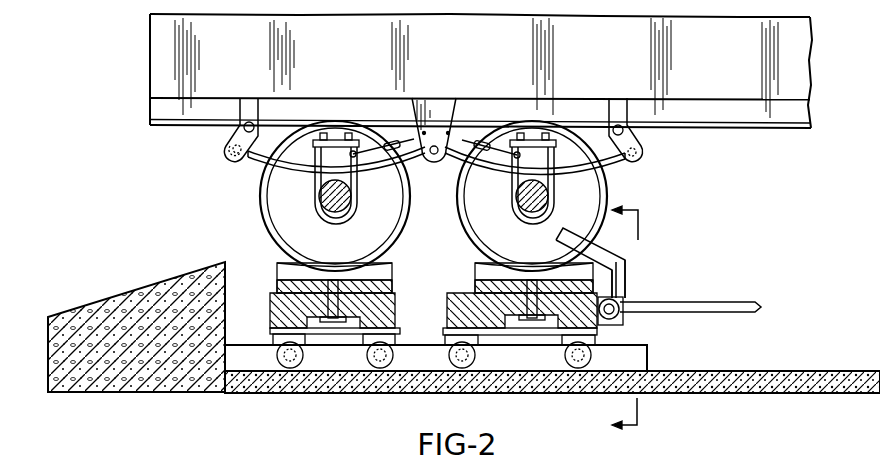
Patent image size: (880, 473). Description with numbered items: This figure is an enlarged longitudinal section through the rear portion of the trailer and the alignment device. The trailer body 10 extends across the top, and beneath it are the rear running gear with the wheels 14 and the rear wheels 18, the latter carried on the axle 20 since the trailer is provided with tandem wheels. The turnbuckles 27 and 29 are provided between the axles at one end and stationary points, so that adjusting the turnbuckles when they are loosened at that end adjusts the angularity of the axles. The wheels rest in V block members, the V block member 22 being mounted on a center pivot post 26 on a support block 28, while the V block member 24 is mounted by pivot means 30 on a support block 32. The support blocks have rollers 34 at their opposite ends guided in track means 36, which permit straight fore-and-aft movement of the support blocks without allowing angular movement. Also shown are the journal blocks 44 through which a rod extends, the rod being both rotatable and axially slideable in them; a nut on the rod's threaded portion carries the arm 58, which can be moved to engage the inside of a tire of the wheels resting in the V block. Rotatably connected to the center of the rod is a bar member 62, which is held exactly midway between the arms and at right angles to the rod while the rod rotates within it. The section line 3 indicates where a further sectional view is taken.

The section line 3- 3 is at (636, 317).
The trailer body 10 is at (724, 101).
The wheels 14 is at (592, 199).
The rear wheels 18 is at (294, 228).
The axle 20 is at (353, 205).
The V block member 22 is at (580, 276).
The V block member 24 is at (393, 275).
The center pivot post 26 is at (530, 320).
The turnbuckle 27 is at (491, 130).
The support block 28 is at (557, 320).
The turnbuckle 29 is at (392, 142).
The pivot means 30 is at (333, 324).
The support block 32 is at (275, 321).
The rollers 34 is at (276, 358).
The track means 36 is at (637, 345).
The journal blocks 44 is at (622, 296).
The arm 58 is at (596, 249).
The bar member 62 is at (716, 302).